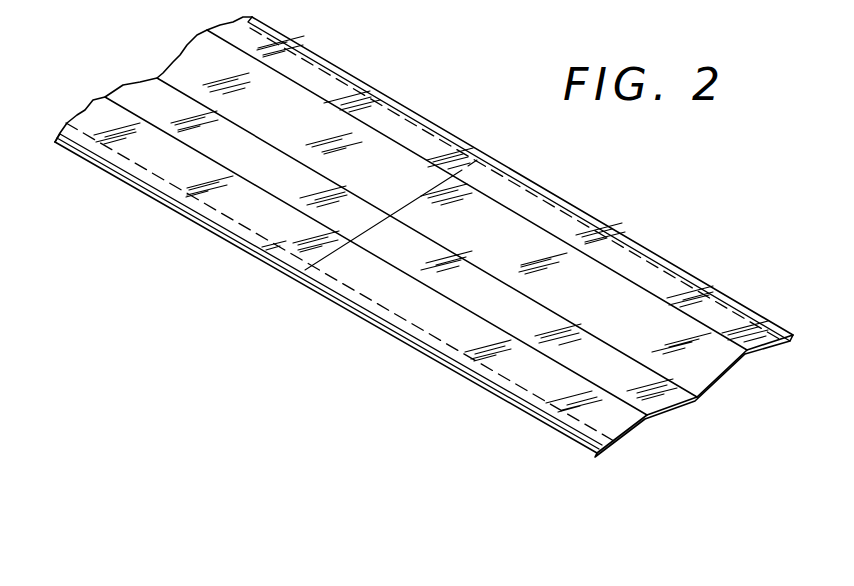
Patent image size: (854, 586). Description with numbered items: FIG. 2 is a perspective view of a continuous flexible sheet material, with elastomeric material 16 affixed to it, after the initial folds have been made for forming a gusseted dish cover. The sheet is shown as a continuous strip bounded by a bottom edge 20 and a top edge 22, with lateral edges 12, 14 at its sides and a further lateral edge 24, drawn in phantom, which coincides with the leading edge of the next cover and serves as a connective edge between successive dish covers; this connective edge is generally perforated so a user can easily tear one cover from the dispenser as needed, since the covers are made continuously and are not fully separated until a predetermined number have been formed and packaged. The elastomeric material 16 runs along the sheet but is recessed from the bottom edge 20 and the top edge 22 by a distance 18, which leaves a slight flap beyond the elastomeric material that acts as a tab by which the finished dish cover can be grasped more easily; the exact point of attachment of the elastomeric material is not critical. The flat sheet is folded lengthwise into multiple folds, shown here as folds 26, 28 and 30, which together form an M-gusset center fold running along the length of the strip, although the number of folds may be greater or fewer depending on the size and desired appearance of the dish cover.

The lateral edge 12 is at (157, 78).
The lateral edge 14 is at (677, 404).
The elastomeric material 16 is at (637, 254).
The distance 18 is at (697, 278).
The bottom edge 20 is at (395, 339).
The top edge 22 is at (548, 195).
The lateral edge 24 is at (427, 193).
The fold 26 is at (473, 311).
The fold 28 is at (477, 264).
The fold 30 is at (603, 266).